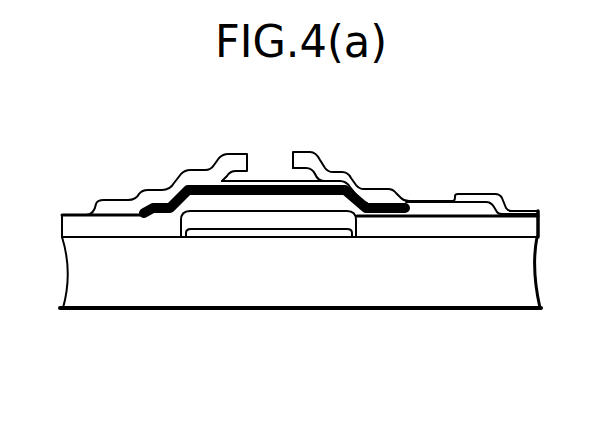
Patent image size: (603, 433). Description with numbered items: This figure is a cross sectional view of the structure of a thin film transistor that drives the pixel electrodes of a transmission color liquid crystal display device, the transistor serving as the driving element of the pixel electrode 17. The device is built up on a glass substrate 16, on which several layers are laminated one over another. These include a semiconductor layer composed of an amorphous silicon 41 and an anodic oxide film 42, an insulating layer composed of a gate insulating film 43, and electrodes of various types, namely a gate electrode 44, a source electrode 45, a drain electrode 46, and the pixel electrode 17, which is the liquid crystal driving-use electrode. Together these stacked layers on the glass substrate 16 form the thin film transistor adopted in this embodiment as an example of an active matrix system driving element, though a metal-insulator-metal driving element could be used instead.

The glass substrate 16 is at (123, 282).
The pixel electrode 17 is at (525, 212).
The amorphous silicon 41 is at (337, 192).
The anodic oxide film 42 is at (253, 222).
The gate insulating film 43 is at (425, 233).
The gate electrode 44 is at (270, 236).
The source electrode 45 is at (120, 200).
The drain electrode 46 is at (383, 192).